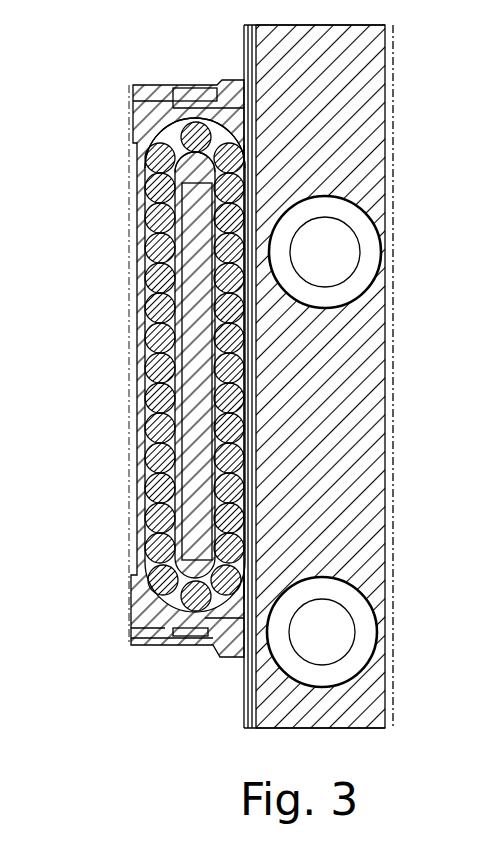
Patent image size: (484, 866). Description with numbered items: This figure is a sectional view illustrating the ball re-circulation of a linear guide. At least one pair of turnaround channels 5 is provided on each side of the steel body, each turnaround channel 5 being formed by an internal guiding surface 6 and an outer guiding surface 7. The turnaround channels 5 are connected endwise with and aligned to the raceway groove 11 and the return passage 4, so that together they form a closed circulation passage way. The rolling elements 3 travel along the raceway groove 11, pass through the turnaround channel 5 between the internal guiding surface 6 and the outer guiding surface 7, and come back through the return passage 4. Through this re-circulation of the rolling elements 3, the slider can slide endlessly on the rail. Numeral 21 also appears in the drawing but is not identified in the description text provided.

The rolling elements 3 is at (143, 482).
The return passage 4 is at (153, 269).
The turnaround channel 5 is at (172, 132).
The internal guiding surface 6 is at (300, 72).
The outer guiding surface 7 is at (176, 83).
The raceway groove 11 is at (244, 373).
The raceway surface 21 is at (233, 347).